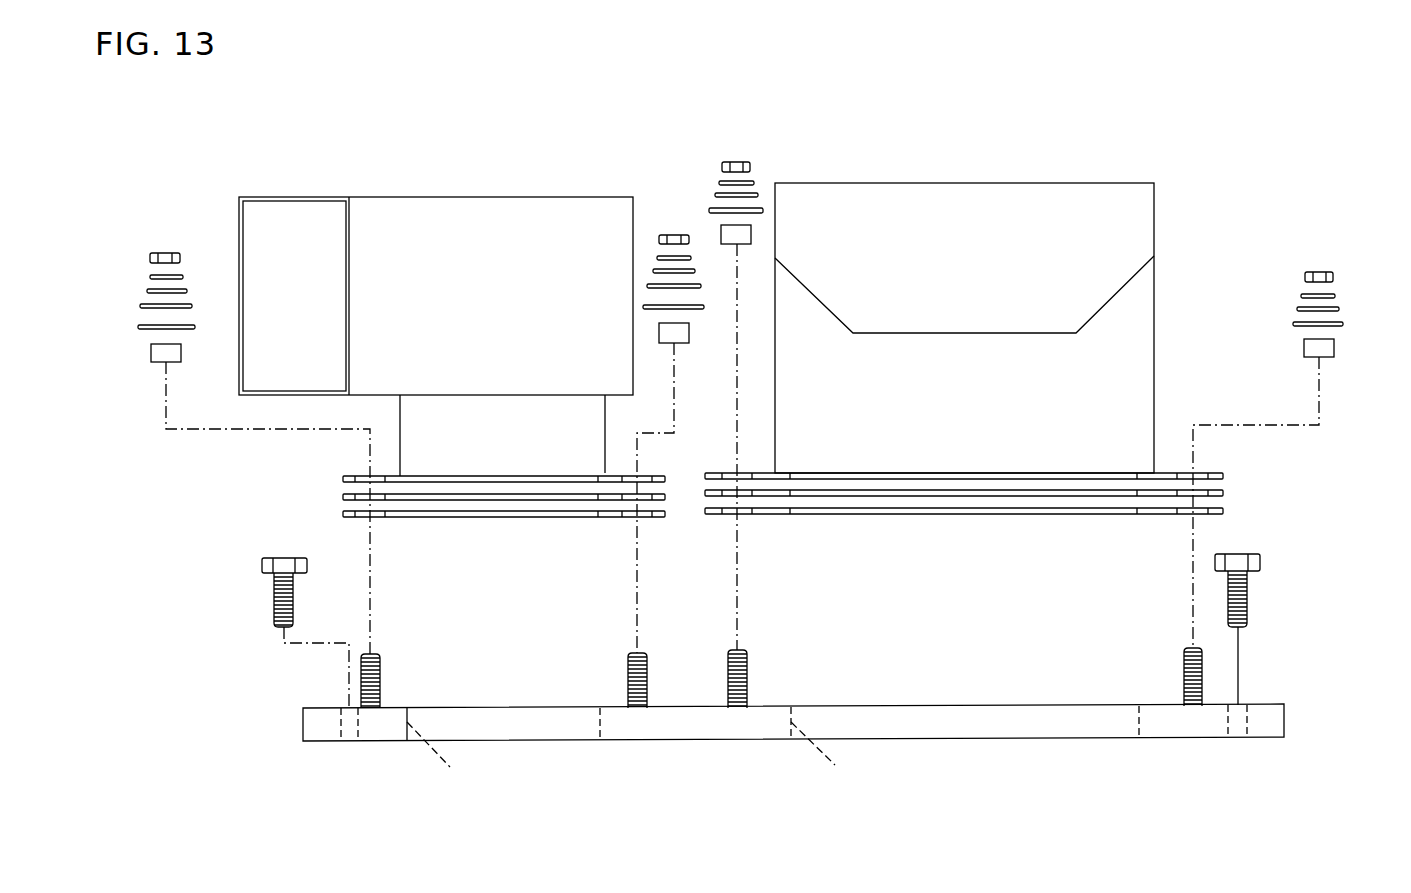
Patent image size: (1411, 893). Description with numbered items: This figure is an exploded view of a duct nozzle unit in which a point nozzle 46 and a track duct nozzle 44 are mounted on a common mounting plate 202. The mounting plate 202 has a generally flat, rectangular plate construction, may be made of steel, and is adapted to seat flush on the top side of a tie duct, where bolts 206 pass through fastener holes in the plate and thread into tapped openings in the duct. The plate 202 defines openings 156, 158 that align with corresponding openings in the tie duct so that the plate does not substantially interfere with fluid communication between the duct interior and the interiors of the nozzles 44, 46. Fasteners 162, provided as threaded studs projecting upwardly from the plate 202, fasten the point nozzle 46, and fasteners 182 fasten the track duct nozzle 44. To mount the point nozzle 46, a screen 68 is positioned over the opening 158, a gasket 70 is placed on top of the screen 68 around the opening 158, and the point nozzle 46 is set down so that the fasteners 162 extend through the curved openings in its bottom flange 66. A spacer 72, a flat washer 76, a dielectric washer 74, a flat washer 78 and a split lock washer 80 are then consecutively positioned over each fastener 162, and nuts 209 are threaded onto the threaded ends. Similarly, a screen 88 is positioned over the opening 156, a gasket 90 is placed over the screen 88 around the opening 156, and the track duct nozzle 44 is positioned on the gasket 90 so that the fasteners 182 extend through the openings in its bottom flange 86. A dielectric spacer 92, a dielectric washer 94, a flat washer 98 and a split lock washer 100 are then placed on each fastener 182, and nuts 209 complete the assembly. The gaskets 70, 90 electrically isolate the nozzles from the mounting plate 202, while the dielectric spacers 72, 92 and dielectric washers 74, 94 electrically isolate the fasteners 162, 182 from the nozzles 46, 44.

The track duct nozzle 44 is at (963, 183).
The point nozzle 46 is at (458, 197).
The bottom flange 66 is at (341, 479).
The screen 68 is at (341, 515).
The gasket 70 is at (341, 497).
The dielectric spacer/bushing 72 is at (152, 352).
The dielectric washer 74 is at (138, 305).
The flat washer 76 is at (137, 327).
The flat washer 78 is at (146, 290).
The split lock washer 80 is at (148, 277).
The bottom flange 86 is at (1225, 476).
The screen 88 is at (1225, 511).
The gasket 90 is at (1225, 494).
The dielectric spacer/bushing 92 is at (1336, 348).
The dielectric washer 94 is at (1345, 323).
The flat washer 98 is at (1340, 309).
The split lock washer 100 is at (1336, 295).
The opening 156 is at (836, 751).
The opening 158 is at (452, 751).
The fastener 162 is at (381, 666).
The fastener 182 is at (748, 668).
The mounting plate 202 is at (662, 741).
The bolt 206 is at (263, 565).
The nut 209 is at (152, 255).